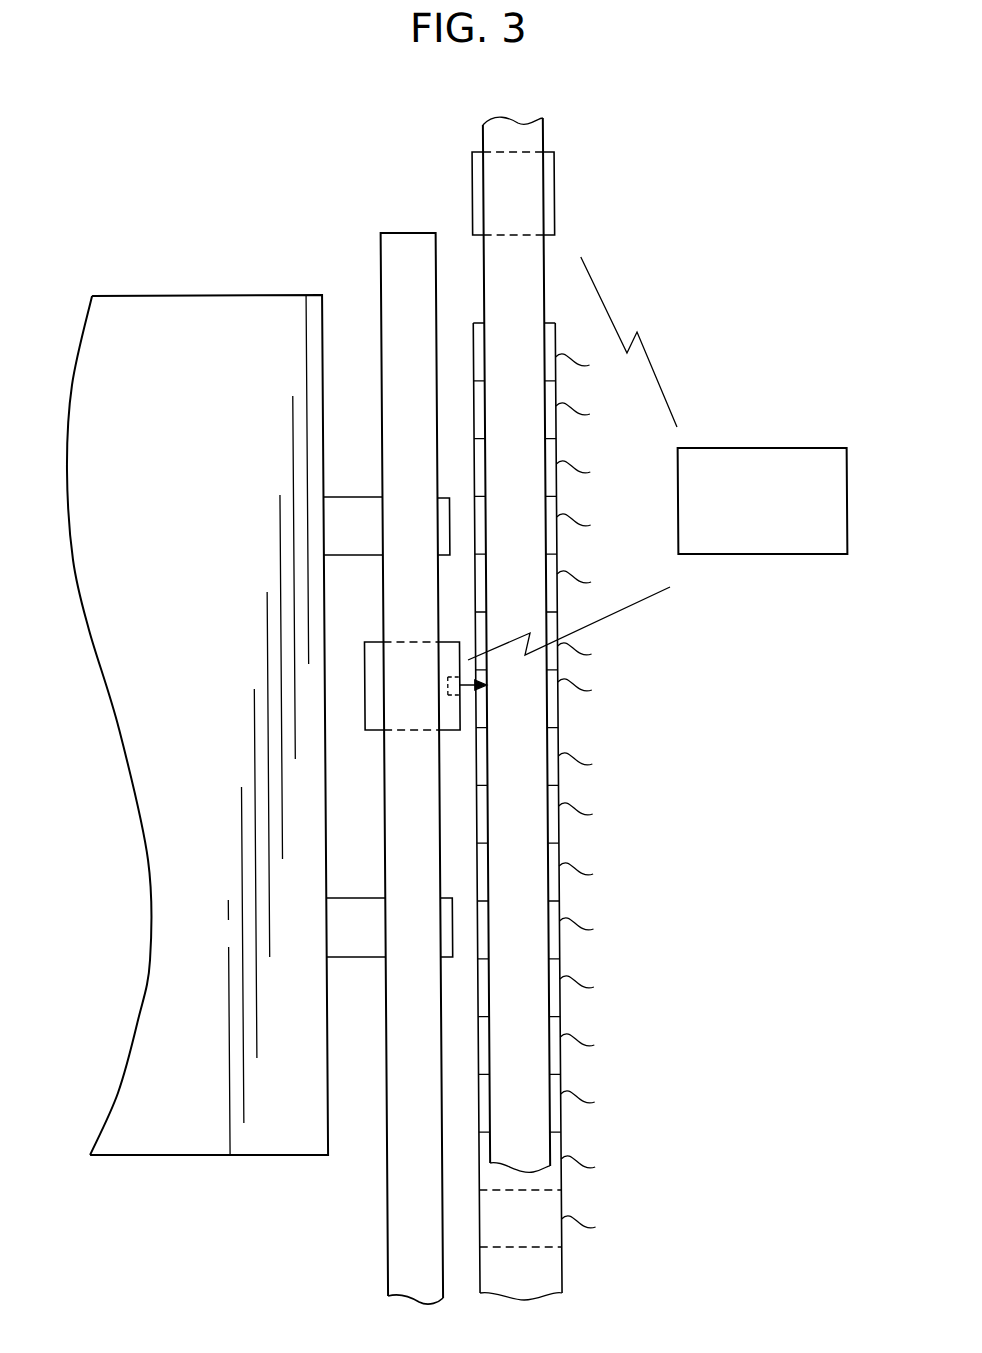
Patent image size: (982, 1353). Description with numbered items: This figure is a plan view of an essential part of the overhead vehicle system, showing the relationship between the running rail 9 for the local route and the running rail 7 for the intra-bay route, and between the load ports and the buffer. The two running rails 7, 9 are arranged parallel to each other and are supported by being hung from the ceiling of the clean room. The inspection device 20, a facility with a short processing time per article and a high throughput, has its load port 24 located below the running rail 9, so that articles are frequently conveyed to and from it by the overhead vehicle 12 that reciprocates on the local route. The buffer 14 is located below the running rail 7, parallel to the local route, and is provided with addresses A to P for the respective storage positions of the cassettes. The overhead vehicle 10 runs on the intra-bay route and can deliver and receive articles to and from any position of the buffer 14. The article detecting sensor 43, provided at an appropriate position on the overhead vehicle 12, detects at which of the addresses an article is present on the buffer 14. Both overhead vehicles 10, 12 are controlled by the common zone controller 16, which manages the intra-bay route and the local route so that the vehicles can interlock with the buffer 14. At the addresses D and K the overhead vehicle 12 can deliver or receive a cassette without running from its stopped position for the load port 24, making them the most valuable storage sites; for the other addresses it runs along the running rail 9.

The running rail 7 is at (525, 252).
The running rail 9 is at (379, 1280).
The overhead vehicle 10 is at (553, 176).
The overhead vehicle 12 is at (365, 713).
The buffer 14 is at (557, 1205).
The zone controller 16 is at (795, 447).
The inspection device 20 is at (174, 1160).
The load port 24 is at (346, 510).
The article detecting sensor 43 is at (448, 695).